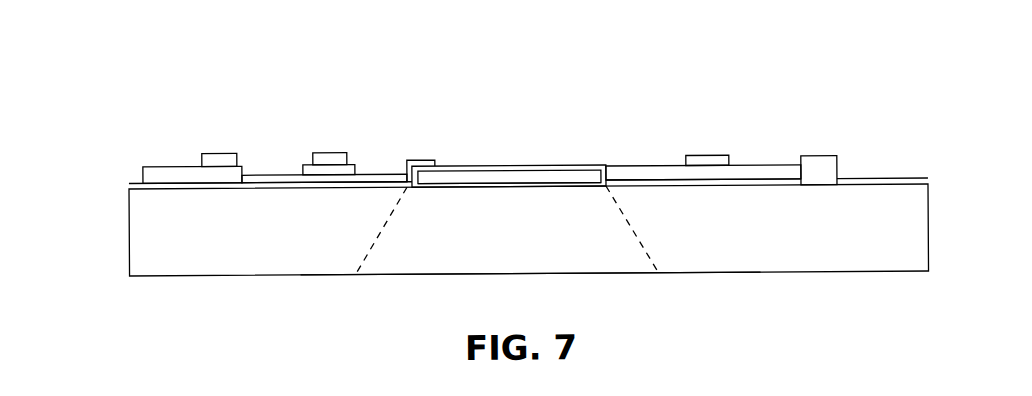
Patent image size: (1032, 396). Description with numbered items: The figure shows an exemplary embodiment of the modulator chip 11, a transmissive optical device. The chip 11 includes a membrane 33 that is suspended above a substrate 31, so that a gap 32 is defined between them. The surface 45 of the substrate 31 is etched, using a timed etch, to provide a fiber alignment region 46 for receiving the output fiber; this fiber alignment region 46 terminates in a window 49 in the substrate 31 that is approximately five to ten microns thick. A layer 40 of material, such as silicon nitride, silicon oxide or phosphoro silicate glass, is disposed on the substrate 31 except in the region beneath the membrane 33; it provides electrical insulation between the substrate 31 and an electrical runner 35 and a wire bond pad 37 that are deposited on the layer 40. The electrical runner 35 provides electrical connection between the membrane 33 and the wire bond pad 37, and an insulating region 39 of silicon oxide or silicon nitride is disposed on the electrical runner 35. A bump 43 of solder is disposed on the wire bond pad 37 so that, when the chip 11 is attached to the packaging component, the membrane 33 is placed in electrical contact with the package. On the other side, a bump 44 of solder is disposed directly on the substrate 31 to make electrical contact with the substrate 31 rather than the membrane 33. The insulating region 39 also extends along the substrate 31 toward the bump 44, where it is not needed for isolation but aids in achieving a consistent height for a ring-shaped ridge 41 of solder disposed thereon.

The modulator chip 11 is at (877, 92).
The substrate 31 is at (669, 250).
The gap 32 is at (485, 184).
The membrane 33 is at (550, 168).
The electrical runner 35 is at (286, 177).
The wire bond pad 37 is at (188, 173).
The insulating region 39 is at (352, 176).
The layer 40 is at (130, 184).
The ring-shaped ridge 41 is at (330, 158).
The solder bump 43 is at (220, 158).
The bump 44 is at (817, 166).
The surface 45 is at (393, 278).
The fiber alignment region 46 is at (415, 256).
The window 49 is at (560, 187).